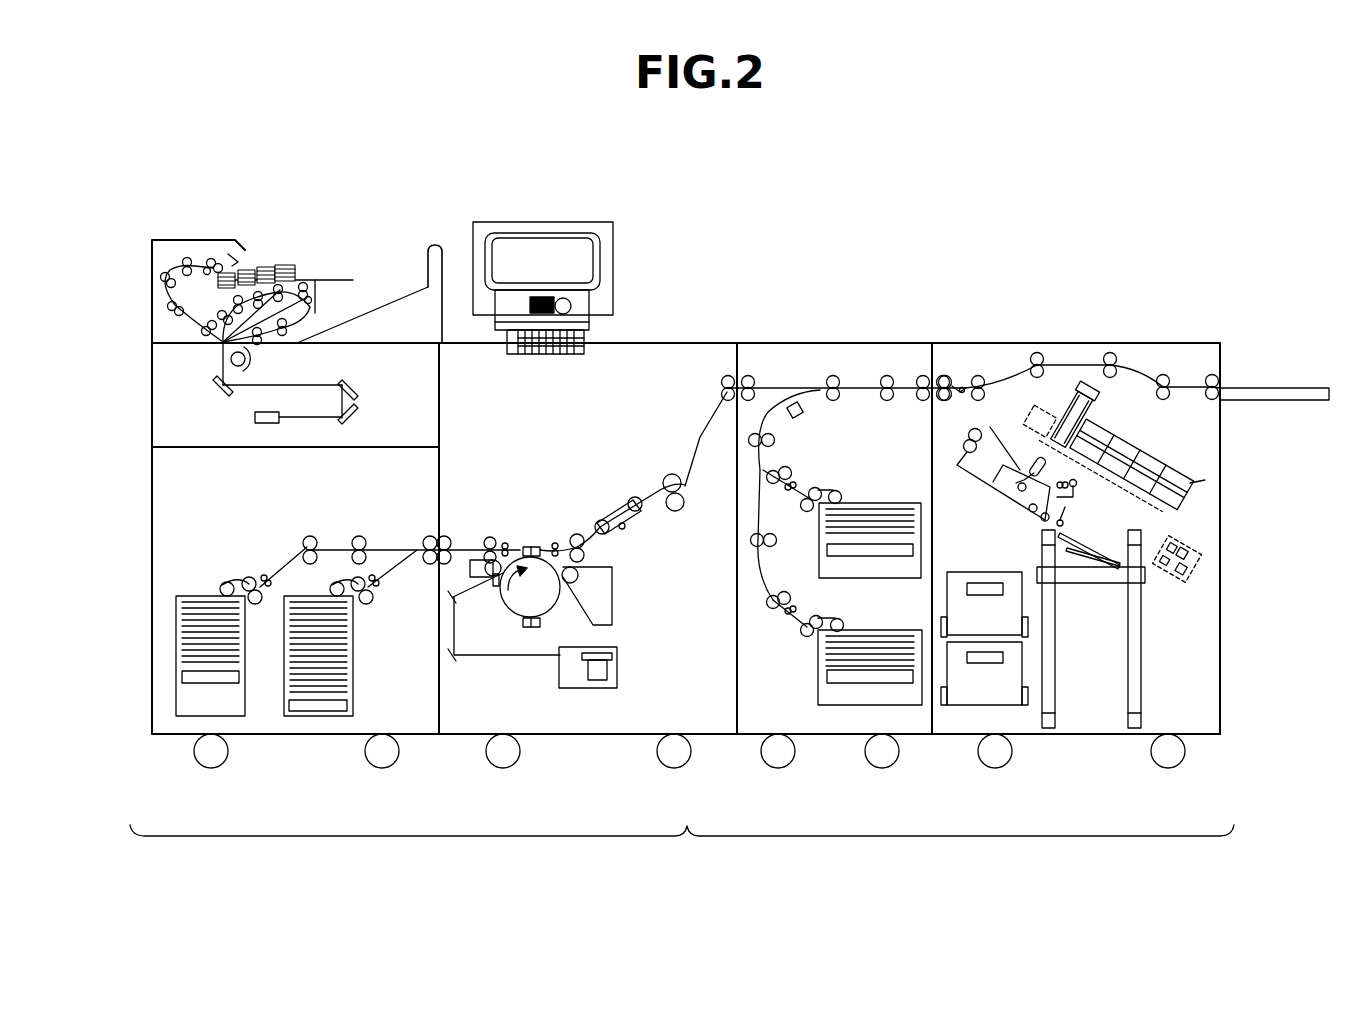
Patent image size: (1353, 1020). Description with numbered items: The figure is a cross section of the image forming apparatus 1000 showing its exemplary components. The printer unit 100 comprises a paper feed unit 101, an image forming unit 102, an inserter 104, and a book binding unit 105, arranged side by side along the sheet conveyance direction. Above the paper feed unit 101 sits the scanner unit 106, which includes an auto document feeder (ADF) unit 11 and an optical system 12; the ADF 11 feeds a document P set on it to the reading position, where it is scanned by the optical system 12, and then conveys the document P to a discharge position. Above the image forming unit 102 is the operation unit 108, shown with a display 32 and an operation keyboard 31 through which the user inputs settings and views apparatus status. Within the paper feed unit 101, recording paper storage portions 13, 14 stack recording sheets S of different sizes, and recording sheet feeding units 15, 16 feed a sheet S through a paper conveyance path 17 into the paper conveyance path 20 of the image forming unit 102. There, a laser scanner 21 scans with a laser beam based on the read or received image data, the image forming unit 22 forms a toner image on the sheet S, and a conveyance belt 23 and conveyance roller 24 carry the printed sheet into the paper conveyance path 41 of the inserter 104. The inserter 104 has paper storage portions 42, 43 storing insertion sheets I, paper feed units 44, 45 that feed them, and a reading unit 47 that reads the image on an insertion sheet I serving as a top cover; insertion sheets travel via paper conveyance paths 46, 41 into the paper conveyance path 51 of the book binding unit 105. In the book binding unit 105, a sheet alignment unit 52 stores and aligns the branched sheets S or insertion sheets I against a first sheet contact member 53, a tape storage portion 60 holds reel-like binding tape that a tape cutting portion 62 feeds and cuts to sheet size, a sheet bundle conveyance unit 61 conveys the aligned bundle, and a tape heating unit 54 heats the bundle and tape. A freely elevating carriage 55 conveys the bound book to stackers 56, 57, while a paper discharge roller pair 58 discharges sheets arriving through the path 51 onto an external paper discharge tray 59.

The image forming apparatus 1000 is at (698, 156).
The printer unit 100 is at (682, 851).
The paper feed unit 101 is at (302, 734).
The image forming unit 102 is at (582, 734).
The inserter 104 is at (833, 734).
The book binding unit 105 is at (1085, 734).
The scanner unit 106 is at (152, 383).
The auto document feeder (ADF) unit 11 is at (248, 256).
The document P is at (292, 272).
The optical system 12 is at (255, 417).
The operation unit 108 is at (573, 262).
The display 32 is at (613, 248).
The operation keyboard 31 is at (590, 325).
The recording paper storage portion 13 is at (180, 700).
The recording paper storage portion 14 is at (346, 700).
The recording sheet S is at (182, 652).
The recording sheet feeding unit 15 is at (232, 583).
The recording sheet feeding unit 16 is at (373, 598).
The paper conveyance path 17 is at (390, 548).
The paper conveyance path 20 is at (470, 548).
The laser scanner 21 is at (617, 665).
The image forming unit 22 is at (590, 592).
The conveyance belt 23 is at (612, 508).
The conveyance roller 24 is at (676, 512).
The paper conveyance path 41 is at (867, 393).
The paper storage portion 42 is at (910, 578).
The paper storage portion 43 is at (827, 694).
The paper feed unit 44 is at (830, 490).
The paper feed unit 45 is at (830, 620).
The paper conveyance path 46 is at (765, 570).
The insertion sheet image reading unit 47 is at (798, 420).
The insertion sheet I is at (826, 522).
The paper conveyance path 51 is at (1065, 365).
The sheet alignment unit 52 is at (1002, 492).
The first sheet contact member 53 is at (1068, 508).
The tape heating unit 54 is at (1178, 580).
The carriage 55 is at (1090, 583).
The stacker 56 is at (968, 572).
The stacker 57 is at (982, 705).
The paper discharge roller pair 58 is at (1200, 395).
The paper discharge tray 59 is at (1272, 388).
The tape storage portion 60 is at (1205, 480).
The sheet bundle conveyance unit 61 is at (1032, 506).
The tape cutting portion 62 is at (1097, 398).